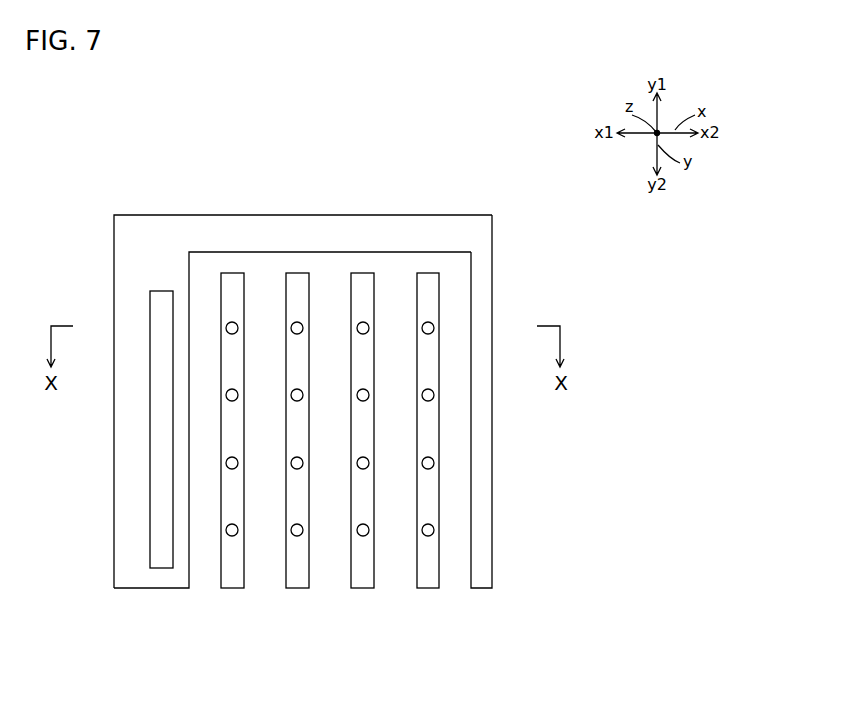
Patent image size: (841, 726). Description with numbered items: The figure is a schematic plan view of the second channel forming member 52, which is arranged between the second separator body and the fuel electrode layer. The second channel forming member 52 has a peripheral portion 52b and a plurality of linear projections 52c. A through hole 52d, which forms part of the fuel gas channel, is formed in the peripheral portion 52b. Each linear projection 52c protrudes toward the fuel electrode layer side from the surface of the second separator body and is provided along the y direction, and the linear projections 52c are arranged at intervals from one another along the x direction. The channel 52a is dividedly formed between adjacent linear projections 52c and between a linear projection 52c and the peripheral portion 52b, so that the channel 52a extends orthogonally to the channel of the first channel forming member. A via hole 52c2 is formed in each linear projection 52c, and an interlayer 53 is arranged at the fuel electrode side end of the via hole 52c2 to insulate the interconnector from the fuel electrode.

The second channel forming member 52 is at (498, 171).
The channel 52a is at (189, 567).
The peripheral portion 52b is at (492, 478).
The linear projections 52c is at (450, 580).
The via hole 52c2 is at (431, 324).
The through hole 52d is at (150, 542).
The interlayer 53 is at (434, 529).